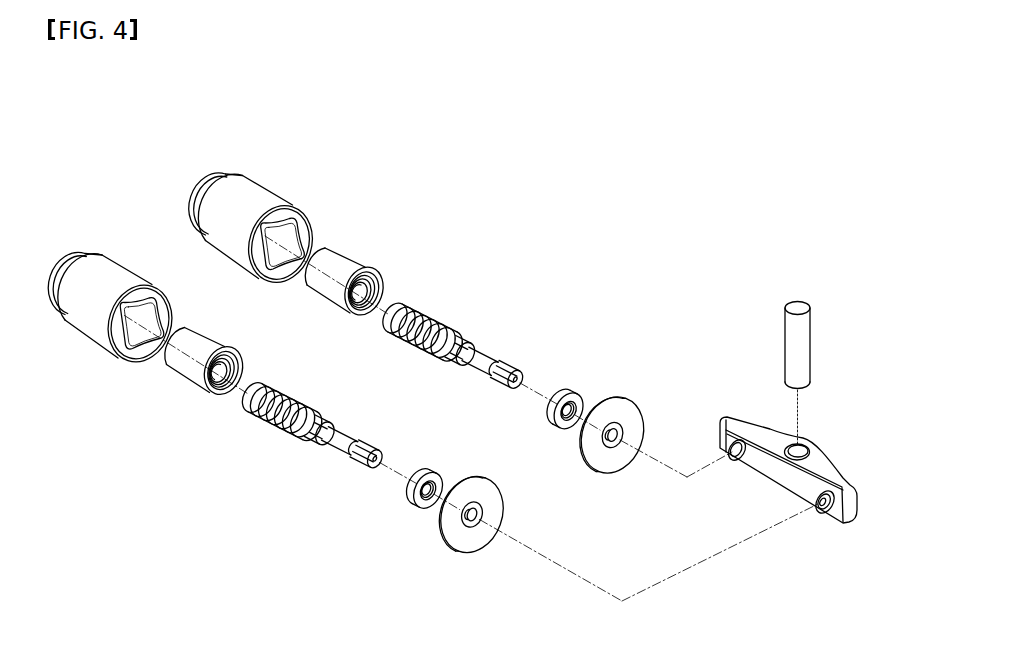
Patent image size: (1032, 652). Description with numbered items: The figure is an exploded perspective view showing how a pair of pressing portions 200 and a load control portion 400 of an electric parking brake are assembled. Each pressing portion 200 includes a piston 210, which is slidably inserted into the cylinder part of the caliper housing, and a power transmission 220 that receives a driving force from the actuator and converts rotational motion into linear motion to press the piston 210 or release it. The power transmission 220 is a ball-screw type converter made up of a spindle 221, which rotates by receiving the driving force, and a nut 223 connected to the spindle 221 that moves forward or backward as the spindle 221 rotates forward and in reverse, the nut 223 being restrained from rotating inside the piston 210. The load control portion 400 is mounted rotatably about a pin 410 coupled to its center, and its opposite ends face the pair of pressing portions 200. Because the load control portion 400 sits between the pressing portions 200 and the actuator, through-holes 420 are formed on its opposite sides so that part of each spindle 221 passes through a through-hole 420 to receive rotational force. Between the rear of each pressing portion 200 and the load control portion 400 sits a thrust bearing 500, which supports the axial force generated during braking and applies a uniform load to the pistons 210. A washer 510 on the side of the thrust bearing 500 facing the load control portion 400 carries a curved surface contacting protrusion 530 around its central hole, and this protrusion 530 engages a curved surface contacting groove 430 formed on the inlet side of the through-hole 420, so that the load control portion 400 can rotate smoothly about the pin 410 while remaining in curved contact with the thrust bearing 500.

The pressing portion 200 is at (358, 212).
The piston 210 is at (258, 190).
The power transmission 220 is at (482, 203).
The spindle 221 is at (443, 320).
The nut 223 is at (358, 266).
The load control portion 400 is at (842, 440).
The pin 410 is at (802, 338).
The through-hole 420 is at (828, 511).
The curved surface contacting groove 430 is at (818, 508).
The thrust bearing 500 is at (567, 389).
The washer 510 is at (625, 410).
The curved surface contacting protrusion 530 is at (610, 455).